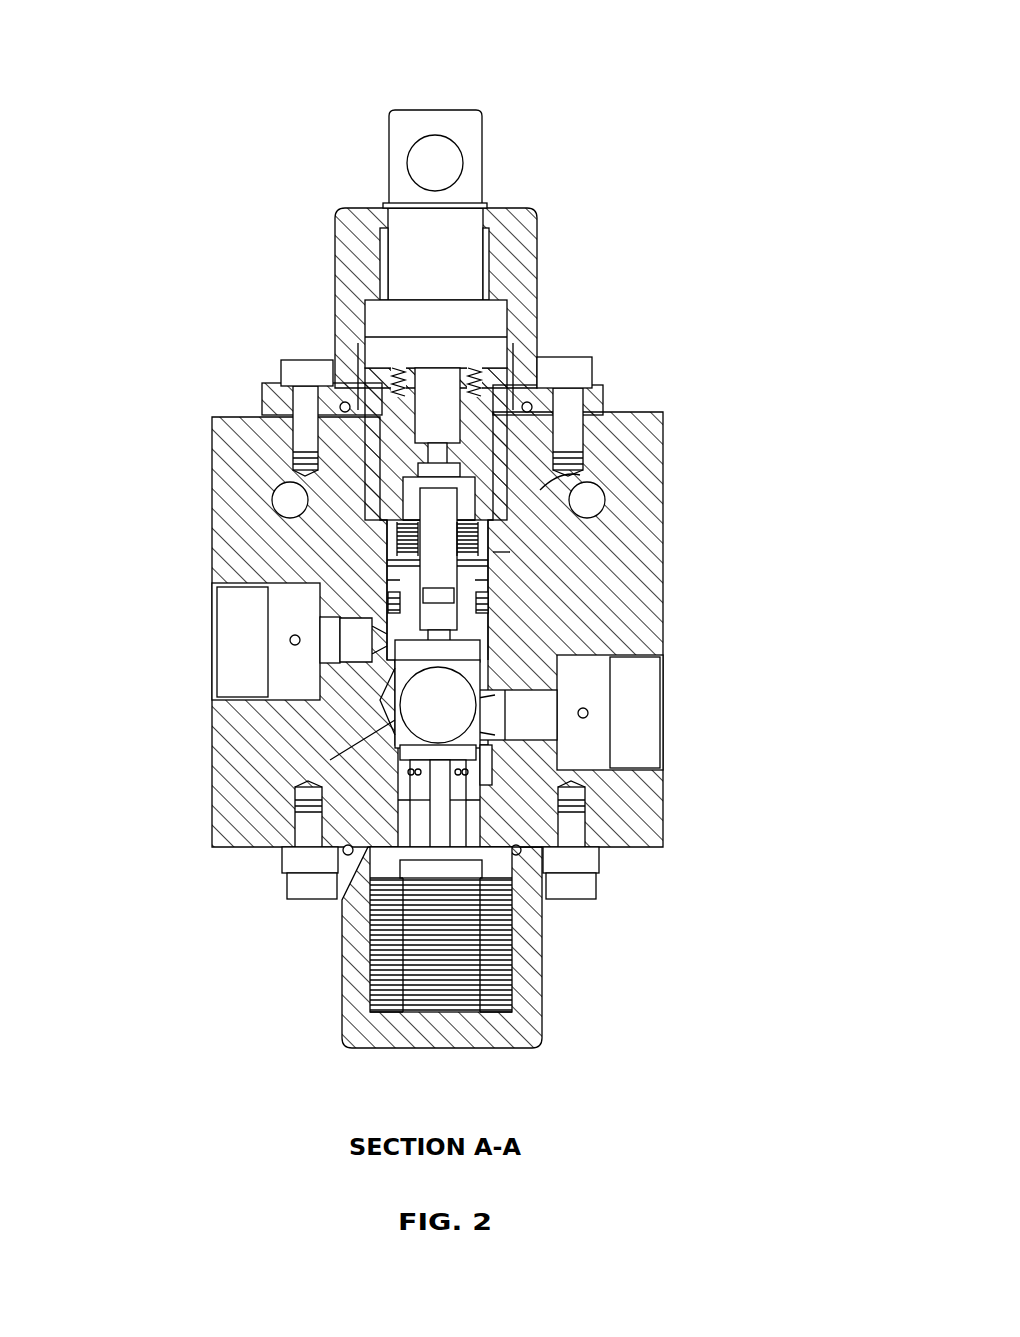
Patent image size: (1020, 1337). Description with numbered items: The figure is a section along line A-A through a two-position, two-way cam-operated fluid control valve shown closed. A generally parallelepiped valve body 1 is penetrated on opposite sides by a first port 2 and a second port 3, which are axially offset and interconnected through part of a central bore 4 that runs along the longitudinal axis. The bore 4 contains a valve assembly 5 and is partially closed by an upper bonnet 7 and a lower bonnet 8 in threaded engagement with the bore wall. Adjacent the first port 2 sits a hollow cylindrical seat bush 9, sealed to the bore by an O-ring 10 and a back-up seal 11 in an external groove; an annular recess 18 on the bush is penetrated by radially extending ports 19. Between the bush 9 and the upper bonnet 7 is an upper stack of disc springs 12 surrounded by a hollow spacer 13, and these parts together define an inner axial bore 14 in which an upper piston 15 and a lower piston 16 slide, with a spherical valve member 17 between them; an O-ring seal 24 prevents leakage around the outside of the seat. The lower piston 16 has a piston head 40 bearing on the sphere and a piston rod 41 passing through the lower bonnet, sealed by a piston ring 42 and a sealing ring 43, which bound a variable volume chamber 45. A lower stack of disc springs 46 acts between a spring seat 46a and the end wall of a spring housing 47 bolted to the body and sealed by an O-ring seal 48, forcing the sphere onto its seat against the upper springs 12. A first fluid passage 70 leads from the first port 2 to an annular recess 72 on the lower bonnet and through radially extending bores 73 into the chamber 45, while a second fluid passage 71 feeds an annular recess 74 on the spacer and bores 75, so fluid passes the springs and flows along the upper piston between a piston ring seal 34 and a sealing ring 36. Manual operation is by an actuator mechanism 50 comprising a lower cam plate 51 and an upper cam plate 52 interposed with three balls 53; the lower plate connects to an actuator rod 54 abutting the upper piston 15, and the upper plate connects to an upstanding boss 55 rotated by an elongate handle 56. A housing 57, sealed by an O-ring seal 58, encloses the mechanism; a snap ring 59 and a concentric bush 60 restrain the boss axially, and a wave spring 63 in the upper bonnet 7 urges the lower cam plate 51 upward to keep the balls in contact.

The valve body 1 is at (212, 497).
The first port 2 is at (228, 628).
The second port 3 is at (635, 720).
The central bore 4 is at (505, 503).
The valve assembly 5 is at (397, 680).
The upper bonnet 7 is at (366, 380).
The lower bonnet 8 is at (518, 885).
The seat bush 9 is at (482, 552).
The O-ring 10 is at (495, 573).
The back-up seal 11 is at (495, 573).
The upper stack of disc springs 12 is at (393, 537).
The spacer 13 is at (490, 522).
The inner axial bore 14 is at (493, 528).
The upper piston 15 is at (468, 617).
The lower piston 16 is at (432, 905).
The valve member 17 is at (397, 702).
The annular recess 18 is at (487, 647).
The radially extending ports 19 is at (490, 673).
The O-ring seal 24 is at (492, 690).
The piston ring seal 34 is at (405, 597).
The sealing ring 36 is at (420, 468).
The piston head 40 is at (408, 772).
The piston rod 41 is at (455, 880).
The piston ring 42 is at (492, 748).
The sealing ring 43 is at (415, 808).
The variable volume chamber 45 is at (420, 812).
The lower stack of disc springs 46 is at (445, 1016).
The spring seat 46a is at (492, 882).
The spring housing 47 is at (340, 1048).
The O-ring seal 48 is at (340, 852).
The actuator mechanism 50 is at (330, 255).
The lower cam plate 51 is at (380, 312).
The upper cam plate 52 is at (515, 330).
The balls 53 is at (492, 330).
The actuator rod 54 is at (433, 367).
The upstanding boss 55 is at (392, 115).
The elongate handle 56 is at (437, 135).
The housing 57 is at (537, 210).
The O-ring seal 58 is at (313, 408).
The snap ring 59 is at (386, 205).
The concentric bush 60 is at (497, 230).
The wave spring 63 is at (488, 368).
The first fluid passage 70 is at (397, 708).
The second fluid passage 71 is at (493, 600).
The annular recess 72 is at (500, 772).
The radially extending bores 73 is at (483, 775).
The annular recess 74 is at (388, 562).
The radially extending bores 75 is at (487, 538).